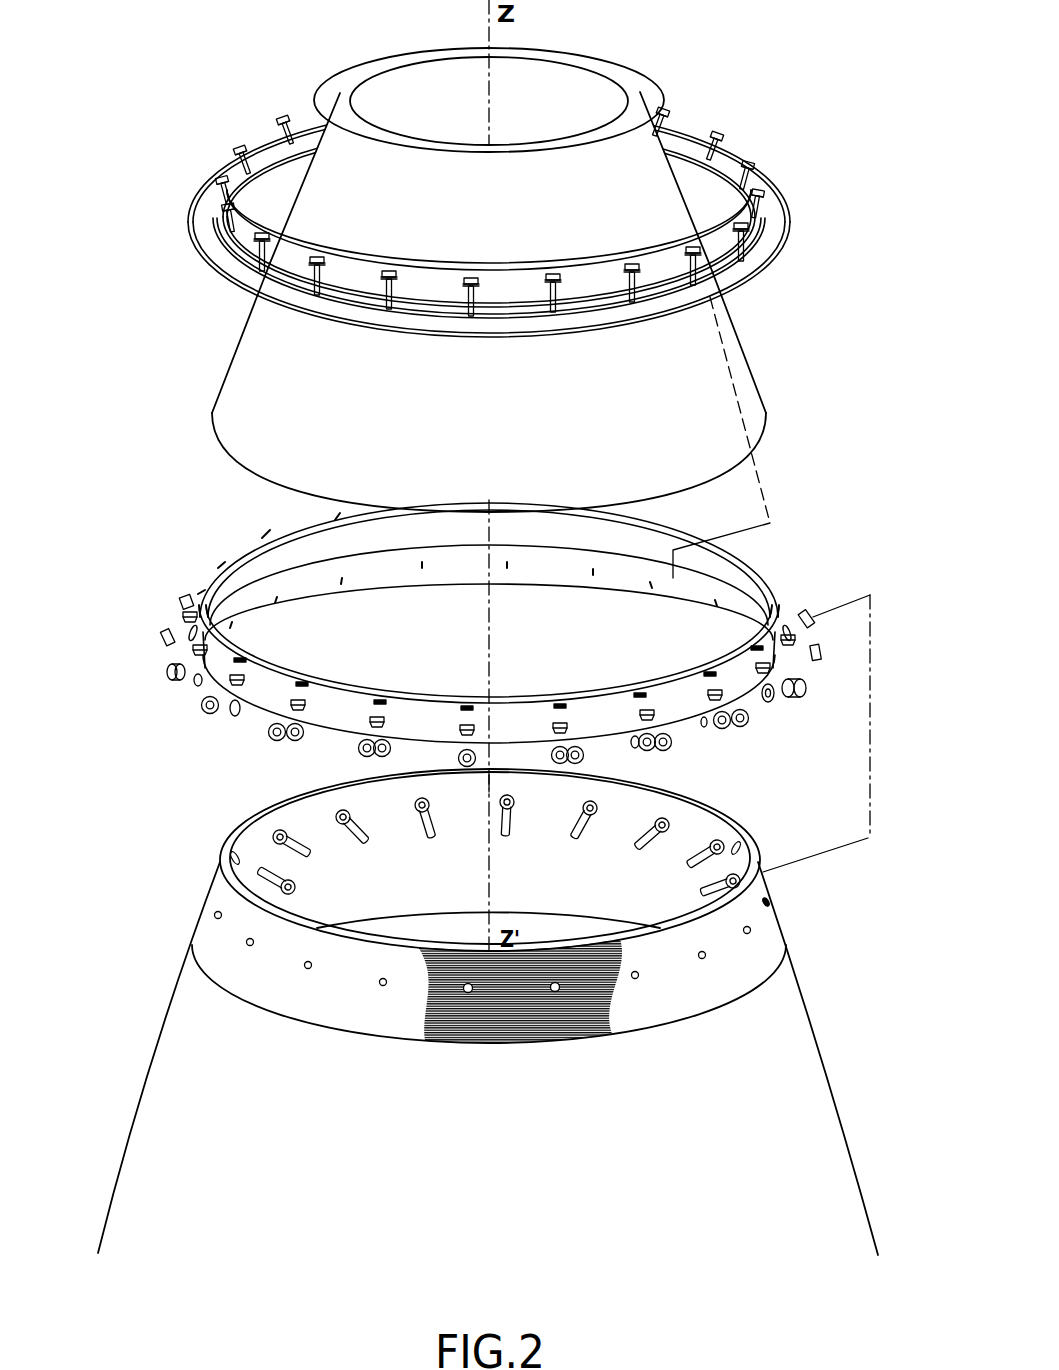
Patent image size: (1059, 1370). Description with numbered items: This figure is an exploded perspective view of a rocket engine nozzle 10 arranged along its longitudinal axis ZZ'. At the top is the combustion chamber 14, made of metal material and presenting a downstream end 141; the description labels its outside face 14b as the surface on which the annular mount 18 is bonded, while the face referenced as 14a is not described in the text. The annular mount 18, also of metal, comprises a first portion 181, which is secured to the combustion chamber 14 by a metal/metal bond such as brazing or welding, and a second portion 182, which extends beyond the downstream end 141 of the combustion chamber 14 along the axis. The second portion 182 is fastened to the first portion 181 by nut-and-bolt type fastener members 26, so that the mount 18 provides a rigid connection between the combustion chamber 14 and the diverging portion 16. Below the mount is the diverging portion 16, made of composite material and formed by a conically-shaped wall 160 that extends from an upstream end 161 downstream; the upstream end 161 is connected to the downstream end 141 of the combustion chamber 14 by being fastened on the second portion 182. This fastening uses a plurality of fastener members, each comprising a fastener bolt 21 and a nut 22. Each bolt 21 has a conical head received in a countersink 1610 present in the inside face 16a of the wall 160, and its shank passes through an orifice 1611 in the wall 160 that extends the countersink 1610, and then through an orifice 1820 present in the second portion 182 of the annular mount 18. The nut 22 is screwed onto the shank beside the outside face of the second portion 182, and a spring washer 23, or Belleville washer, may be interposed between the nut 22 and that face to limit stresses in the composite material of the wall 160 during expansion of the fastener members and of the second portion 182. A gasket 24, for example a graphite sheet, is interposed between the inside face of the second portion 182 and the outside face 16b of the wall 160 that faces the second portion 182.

The rocket engine nozzle 10 is at (146, 130).
The combustion chamber 14 is at (357, 142).
The upstream cone portion 14a is at (612, 170).
The outside face of the combustion chamber 14b is at (568, 82).
The nut-and-bolt type fastener members 26 is at (563, 294).
The downstream end of the combustion chamber 141 is at (284, 370).
The annular mount 18 is at (874, 413).
The first portion of the annular mount 181 is at (770, 250).
The second portion of the annular mount 182 is at (740, 569).
The nut 22 is at (822, 660).
The spring washer 23 is at (721, 732).
The orifice in the second portion of the annular mount 1820 is at (637, 748).
The inside face of the wall 16a is at (307, 813).
The upstream end of the diverging portion 161 is at (697, 837).
The fastener bolt 21 is at (310, 843).
The orifice in the wall 1611 is at (490, 803).
The countersink 1610 is at (517, 820).
The gasket 24 is at (771, 908).
The diverging portion 16 is at (838, 1030).
The outside face of the wall 16b is at (208, 1036).
The conically-shaped wall 160 is at (843, 1152).